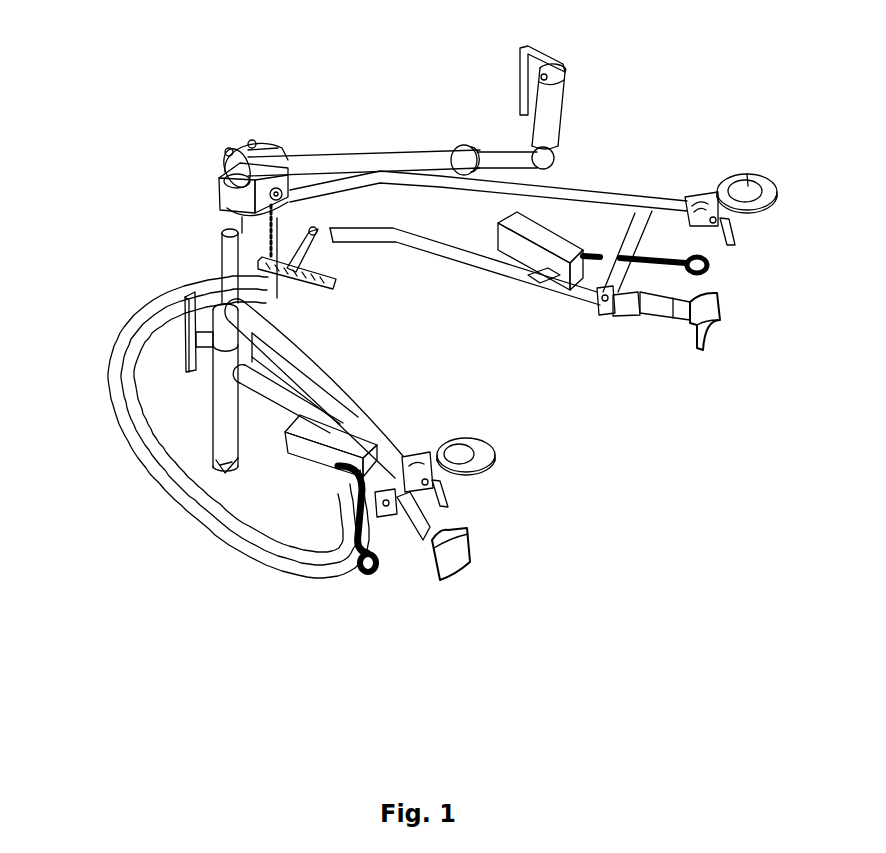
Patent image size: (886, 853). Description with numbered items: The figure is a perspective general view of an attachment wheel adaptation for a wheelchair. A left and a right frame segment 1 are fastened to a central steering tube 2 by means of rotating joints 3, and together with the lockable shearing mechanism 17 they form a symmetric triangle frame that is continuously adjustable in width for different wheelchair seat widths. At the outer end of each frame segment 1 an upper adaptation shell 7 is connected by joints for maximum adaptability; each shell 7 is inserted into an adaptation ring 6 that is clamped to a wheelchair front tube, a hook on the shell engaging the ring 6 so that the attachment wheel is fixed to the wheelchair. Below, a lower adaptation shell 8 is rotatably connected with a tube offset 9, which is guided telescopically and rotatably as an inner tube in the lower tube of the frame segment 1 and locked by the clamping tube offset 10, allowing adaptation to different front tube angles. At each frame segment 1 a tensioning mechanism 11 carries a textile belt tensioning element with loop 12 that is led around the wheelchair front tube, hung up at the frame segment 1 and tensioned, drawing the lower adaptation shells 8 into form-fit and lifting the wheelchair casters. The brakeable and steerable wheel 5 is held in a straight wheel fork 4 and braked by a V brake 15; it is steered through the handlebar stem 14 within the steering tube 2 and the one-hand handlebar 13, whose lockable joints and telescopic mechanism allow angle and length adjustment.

The frame segment 1 is at (598, 190).
The steering tube 2 is at (248, 230).
The rotating joint of steering tube 3 is at (227, 232).
The wheel fork 4 is at (222, 423).
The wheel 5 is at (173, 398).
The adaptation ring 6 is at (777, 183).
The upper adaptation shell 7 is at (735, 238).
The lower adaptation shell 8 is at (720, 304).
The tube offset 9 is at (658, 308).
The clamping tube offset 10 is at (605, 317).
The tensioning mechanism 11 is at (327, 458).
The tensioning element with loop 12 is at (373, 580).
The one-hand handlebar 13 is at (400, 152).
The handlebar stem 14 is at (238, 145).
The V brake 15 is at (187, 306).
The shearing mechanism 17 is at (333, 285).